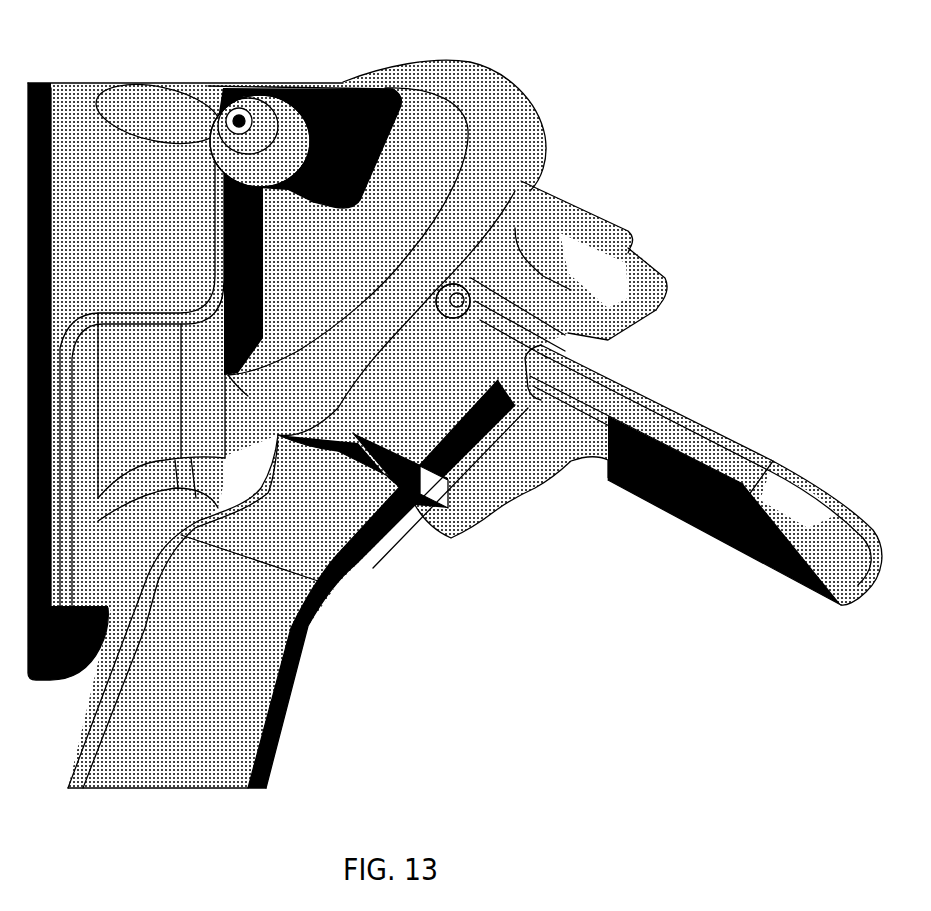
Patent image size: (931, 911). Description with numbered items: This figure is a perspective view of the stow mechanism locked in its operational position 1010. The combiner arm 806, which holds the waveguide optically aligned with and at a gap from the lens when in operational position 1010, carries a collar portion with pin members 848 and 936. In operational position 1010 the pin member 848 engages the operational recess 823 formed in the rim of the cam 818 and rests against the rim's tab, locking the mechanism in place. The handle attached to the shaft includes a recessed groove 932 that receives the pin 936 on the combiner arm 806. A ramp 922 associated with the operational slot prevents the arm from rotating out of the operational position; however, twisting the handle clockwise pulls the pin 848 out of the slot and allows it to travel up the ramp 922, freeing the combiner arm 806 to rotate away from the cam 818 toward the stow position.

The combiner arm 806 is at (212, 630).
The cam 818 is at (510, 92).
The operational recess 823 is at (440, 280).
The pin member 848 is at (452, 292).
The pin member 936 is at (523, 343).
The recessed groove 932 is at (500, 393).
The ramp 922 is at (420, 348).
The operational position 1010 is at (497, 573).